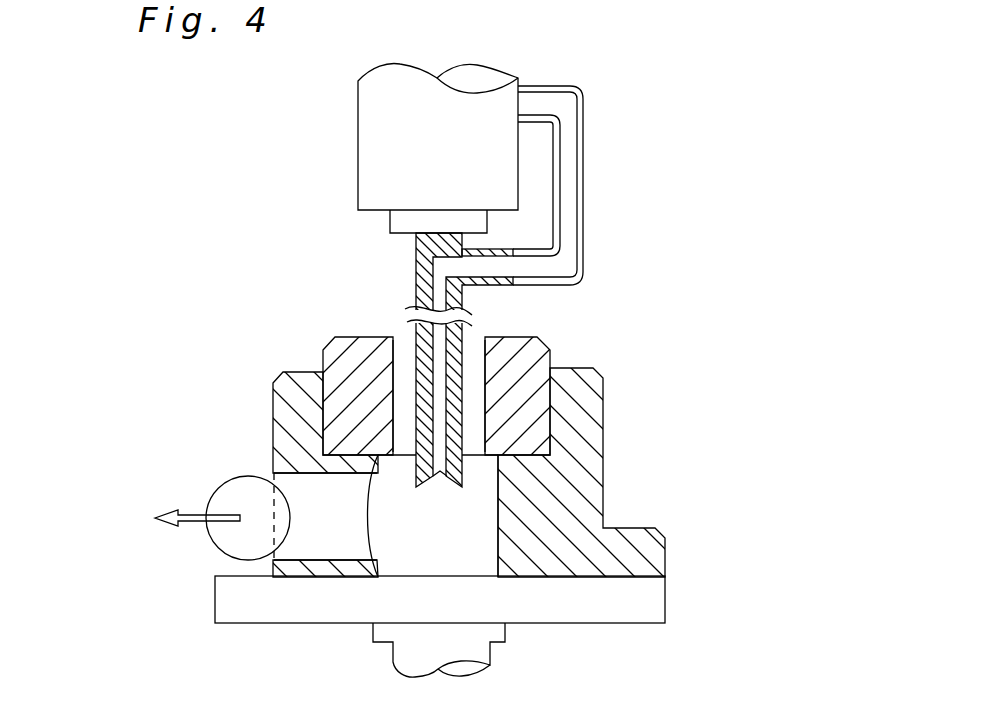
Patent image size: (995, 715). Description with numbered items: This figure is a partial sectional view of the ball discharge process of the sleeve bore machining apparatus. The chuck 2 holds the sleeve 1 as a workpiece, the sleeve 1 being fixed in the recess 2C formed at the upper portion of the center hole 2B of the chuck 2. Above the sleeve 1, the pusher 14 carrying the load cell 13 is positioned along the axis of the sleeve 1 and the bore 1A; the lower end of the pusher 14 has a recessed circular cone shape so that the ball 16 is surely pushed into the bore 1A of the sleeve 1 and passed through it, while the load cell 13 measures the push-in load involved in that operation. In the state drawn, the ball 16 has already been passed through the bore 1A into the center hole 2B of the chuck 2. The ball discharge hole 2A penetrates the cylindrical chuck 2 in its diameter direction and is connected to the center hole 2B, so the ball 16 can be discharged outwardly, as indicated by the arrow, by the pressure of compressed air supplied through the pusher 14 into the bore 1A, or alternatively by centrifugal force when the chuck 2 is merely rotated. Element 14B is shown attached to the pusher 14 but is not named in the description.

The sleeve 1 is at (365, 367).
The bore of the sleeve 1A is at (490, 401).
The chuck 2 is at (287, 397).
The ball discharge hole 2A is at (313, 493).
The center hole of the chuck 2B is at (483, 537).
The recess of the chuck 2C is at (528, 458).
The load cell 13 is at (382, 128).
The pusher 14 is at (415, 280).
The electrode plate 14B is at (437, 373).
The ball 16 is at (240, 495).